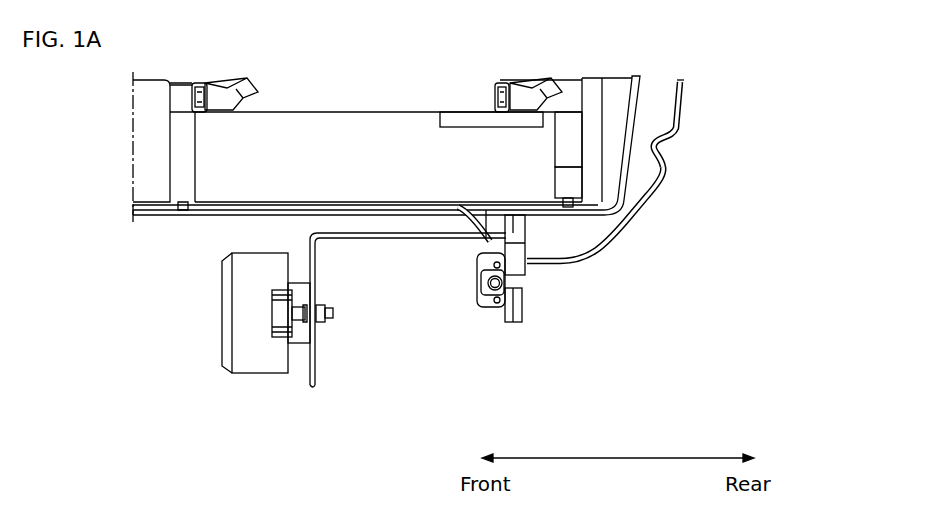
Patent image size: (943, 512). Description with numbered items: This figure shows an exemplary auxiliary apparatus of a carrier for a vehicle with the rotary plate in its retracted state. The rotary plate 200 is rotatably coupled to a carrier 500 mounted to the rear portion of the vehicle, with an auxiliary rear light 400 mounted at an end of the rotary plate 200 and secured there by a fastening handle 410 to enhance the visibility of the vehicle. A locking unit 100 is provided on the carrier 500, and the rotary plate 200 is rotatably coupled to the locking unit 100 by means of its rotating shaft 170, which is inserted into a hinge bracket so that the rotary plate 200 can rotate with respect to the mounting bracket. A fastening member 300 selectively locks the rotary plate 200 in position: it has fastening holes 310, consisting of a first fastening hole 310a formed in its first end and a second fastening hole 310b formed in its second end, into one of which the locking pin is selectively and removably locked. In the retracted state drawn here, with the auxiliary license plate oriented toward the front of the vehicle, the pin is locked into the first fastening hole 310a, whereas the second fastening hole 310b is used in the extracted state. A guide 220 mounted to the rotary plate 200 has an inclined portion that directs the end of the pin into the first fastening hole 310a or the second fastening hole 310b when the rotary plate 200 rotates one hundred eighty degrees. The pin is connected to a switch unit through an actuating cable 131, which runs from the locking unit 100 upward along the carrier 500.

The locking unit 100 is at (532, 227).
The actuating cable 131 is at (687, 105).
The rotating shaft 170 is at (478, 283).
The rotary plate 200 is at (397, 233).
The guide 220 is at (530, 264).
The fastening member 300 is at (485, 310).
The fastening holes 310 is at (573, 348).
The first fastening hole 310a is at (518, 322).
The second fastening hole 310b is at (498, 303).
The auxiliary rear lights 400 is at (240, 328).
The fastening handles 410 is at (332, 316).
The carrier 500 is at (623, 215).